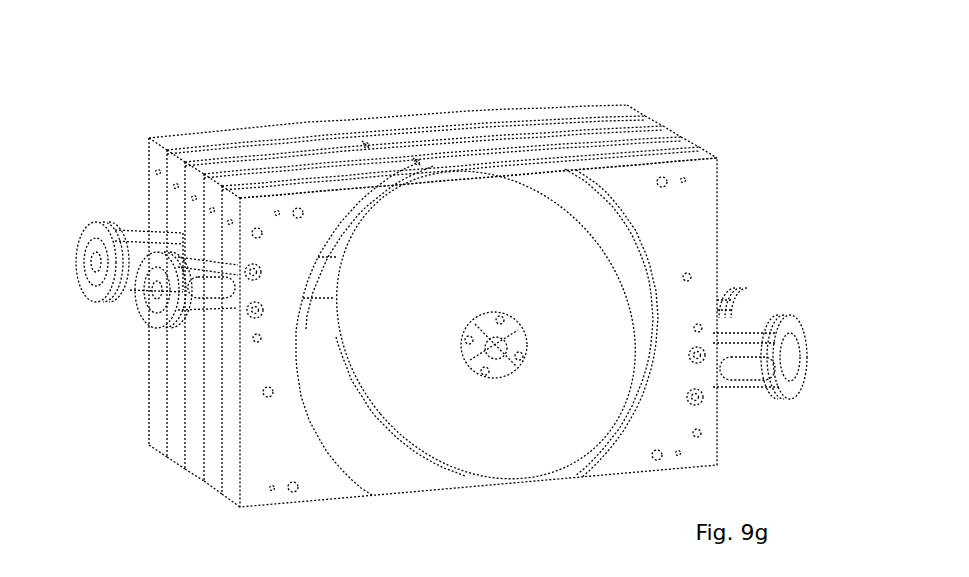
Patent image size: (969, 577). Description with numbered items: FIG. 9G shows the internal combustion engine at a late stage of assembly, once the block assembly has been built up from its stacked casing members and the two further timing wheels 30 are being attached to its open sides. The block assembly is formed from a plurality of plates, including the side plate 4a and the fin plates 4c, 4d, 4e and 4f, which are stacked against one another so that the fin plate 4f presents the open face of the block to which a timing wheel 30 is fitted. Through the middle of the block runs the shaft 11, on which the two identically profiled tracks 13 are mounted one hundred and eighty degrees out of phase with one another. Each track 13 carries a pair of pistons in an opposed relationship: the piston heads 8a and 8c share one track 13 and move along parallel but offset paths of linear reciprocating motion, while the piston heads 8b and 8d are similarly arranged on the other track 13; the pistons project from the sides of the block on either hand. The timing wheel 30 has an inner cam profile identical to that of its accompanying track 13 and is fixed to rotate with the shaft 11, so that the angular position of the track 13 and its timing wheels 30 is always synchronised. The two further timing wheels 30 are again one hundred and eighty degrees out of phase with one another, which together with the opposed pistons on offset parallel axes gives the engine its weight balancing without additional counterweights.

The side plate 4a is at (625, 108).
The fin plate 4c is at (657, 118).
The fin plate 4d is at (670, 130).
The fin plate 4e is at (690, 147).
The fin plate 4f is at (697, 190).
The piston head 8a is at (102, 245).
The piston head 8b is at (157, 288).
The piston head 8c is at (790, 355).
The piston head 8d is at (727, 303).
The shaft 11 is at (520, 357).
The track 13 is at (368, 143).
The timing wheel 30 is at (510, 463).